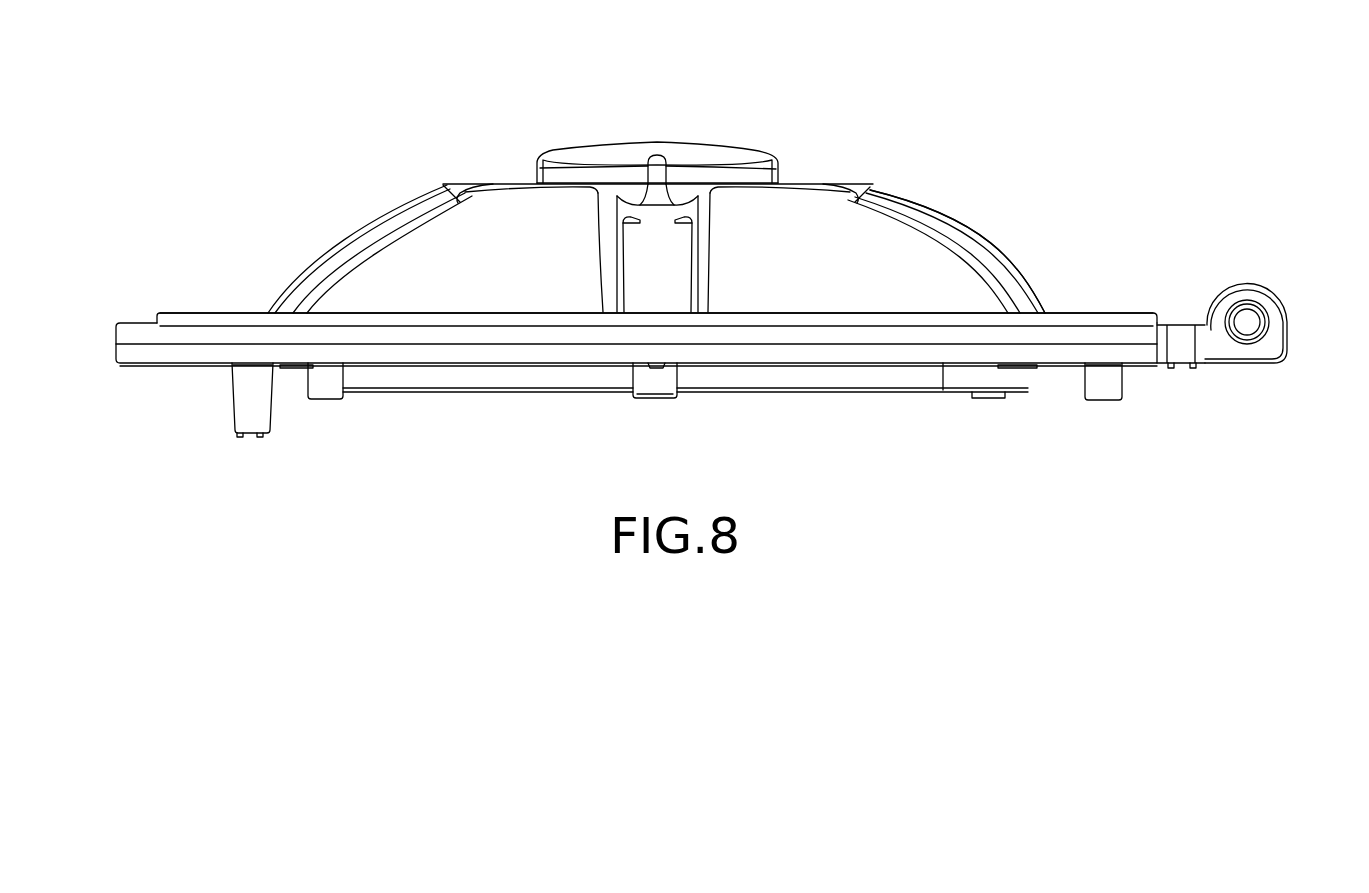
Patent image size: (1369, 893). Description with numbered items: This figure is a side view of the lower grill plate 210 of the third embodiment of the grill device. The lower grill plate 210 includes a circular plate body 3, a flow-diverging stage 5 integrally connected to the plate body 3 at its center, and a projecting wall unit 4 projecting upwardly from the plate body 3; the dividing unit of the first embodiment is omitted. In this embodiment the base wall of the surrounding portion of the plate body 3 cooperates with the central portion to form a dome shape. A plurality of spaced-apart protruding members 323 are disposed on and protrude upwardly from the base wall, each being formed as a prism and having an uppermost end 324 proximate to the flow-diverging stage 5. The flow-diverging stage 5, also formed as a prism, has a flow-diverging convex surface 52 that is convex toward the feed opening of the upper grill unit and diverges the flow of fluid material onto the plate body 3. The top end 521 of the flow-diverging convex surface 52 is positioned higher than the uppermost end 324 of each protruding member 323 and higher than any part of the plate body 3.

The plate body 3 is at (1057, 349).
The projecting wall unit 4 is at (1103, 318).
The flow-diverging stage 5 is at (738, 178).
The flow-diverging convex surface 52 is at (705, 143).
The top end 521 is at (655, 140).
The lower grill plate 210 is at (1003, 213).
The protruding members 323 is at (472, 285).
The uppermost end 324 is at (857, 184).